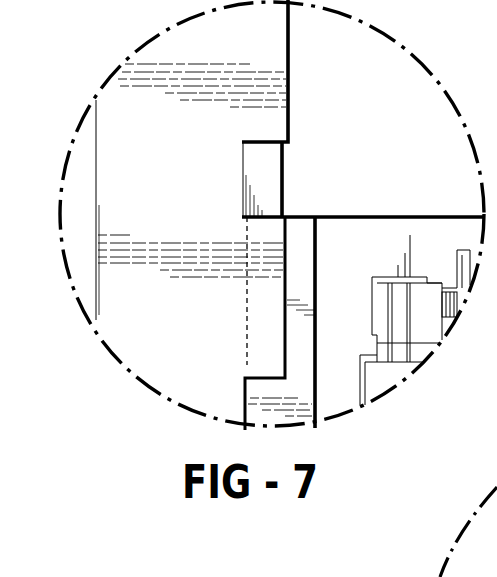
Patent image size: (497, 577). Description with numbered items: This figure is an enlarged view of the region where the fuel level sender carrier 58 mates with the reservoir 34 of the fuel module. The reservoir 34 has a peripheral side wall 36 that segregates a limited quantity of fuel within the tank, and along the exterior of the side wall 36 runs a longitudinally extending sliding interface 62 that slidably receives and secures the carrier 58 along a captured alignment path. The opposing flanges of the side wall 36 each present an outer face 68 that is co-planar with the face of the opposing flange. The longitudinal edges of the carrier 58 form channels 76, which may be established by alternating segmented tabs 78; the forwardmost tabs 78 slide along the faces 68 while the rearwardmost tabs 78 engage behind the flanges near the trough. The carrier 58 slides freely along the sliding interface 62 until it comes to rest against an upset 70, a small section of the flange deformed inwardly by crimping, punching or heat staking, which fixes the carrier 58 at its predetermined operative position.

The reservoir 34 is at (99, 346).
The peripheral side wall 36 is at (77, 202).
The carrier 58 is at (440, 217).
The sliding interface 62 is at (288, 45).
The outer face 68 is at (194, 150).
The upset 70 is at (270, 173).
The channel 76 is at (285, 317).
The segmented tab 78 is at (248, 343).